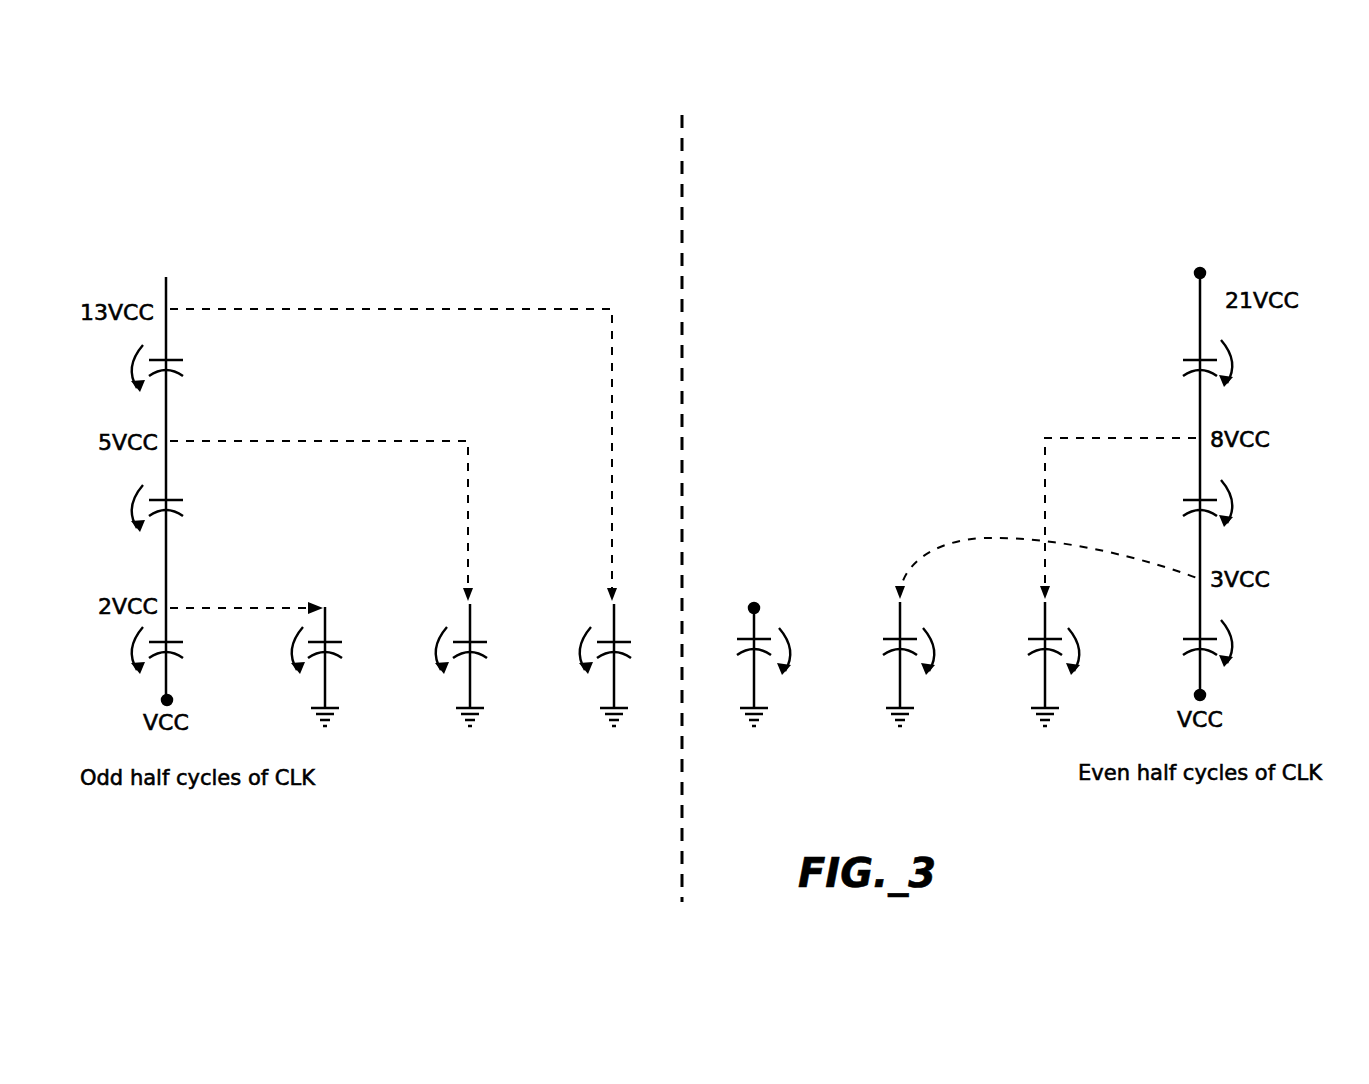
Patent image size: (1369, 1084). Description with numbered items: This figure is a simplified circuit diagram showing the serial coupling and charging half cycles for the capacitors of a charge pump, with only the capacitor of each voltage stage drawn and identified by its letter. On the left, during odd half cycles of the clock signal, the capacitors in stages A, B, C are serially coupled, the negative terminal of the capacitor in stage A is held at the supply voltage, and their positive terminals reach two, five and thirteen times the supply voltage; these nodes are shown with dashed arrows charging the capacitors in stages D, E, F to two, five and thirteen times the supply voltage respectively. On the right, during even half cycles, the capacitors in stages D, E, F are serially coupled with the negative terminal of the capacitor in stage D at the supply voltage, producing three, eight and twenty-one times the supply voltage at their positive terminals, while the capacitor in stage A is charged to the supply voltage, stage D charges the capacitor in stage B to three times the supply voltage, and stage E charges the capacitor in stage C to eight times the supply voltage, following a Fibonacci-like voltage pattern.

The capacitor in voltage stage A is at (144, 650).
The capacitor in voltage stage B is at (140, 508).
The capacitor in voltage stage C is at (139, 368).
The capacitor in voltage stage D is at (292, 666).
The capacitor in voltage stage E is at (439, 665).
The capacitor in voltage stage F is at (577, 665).